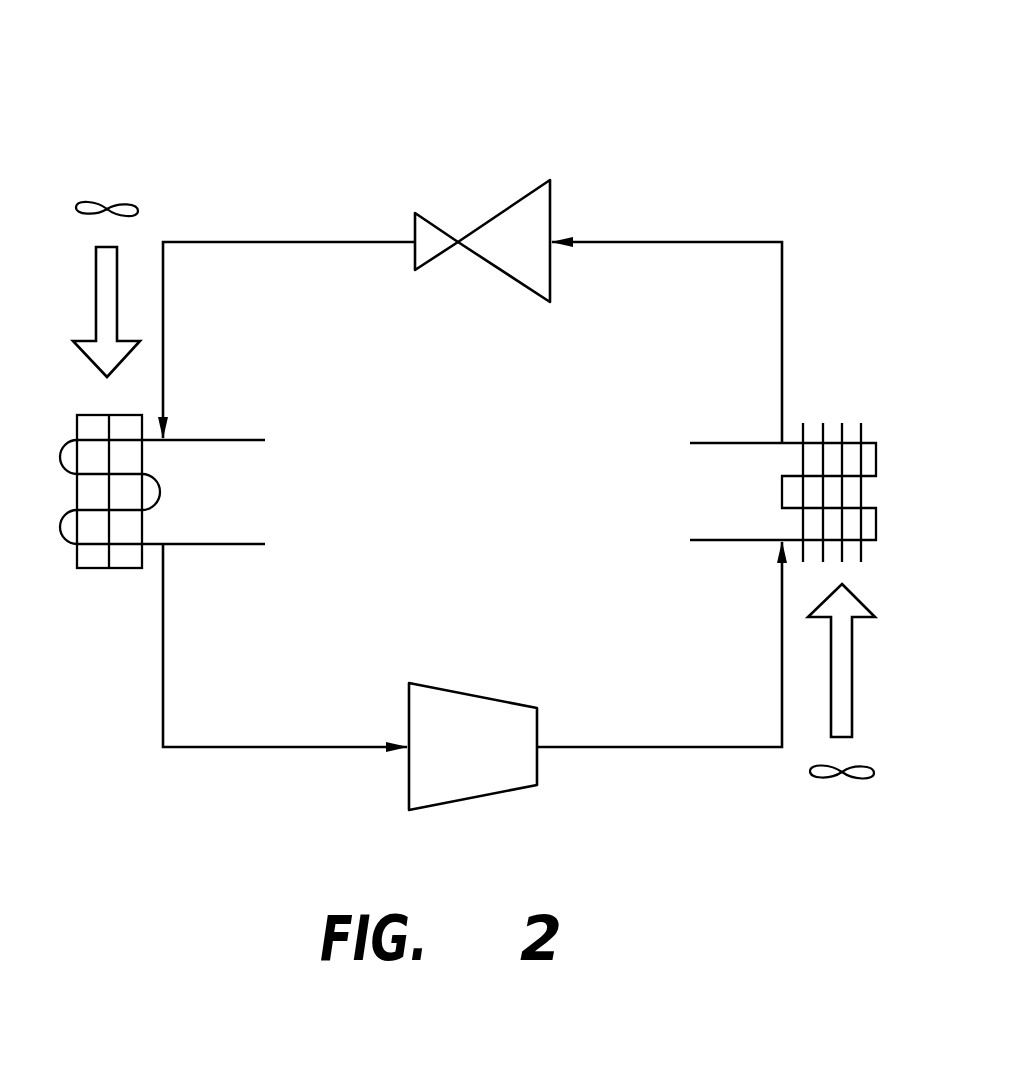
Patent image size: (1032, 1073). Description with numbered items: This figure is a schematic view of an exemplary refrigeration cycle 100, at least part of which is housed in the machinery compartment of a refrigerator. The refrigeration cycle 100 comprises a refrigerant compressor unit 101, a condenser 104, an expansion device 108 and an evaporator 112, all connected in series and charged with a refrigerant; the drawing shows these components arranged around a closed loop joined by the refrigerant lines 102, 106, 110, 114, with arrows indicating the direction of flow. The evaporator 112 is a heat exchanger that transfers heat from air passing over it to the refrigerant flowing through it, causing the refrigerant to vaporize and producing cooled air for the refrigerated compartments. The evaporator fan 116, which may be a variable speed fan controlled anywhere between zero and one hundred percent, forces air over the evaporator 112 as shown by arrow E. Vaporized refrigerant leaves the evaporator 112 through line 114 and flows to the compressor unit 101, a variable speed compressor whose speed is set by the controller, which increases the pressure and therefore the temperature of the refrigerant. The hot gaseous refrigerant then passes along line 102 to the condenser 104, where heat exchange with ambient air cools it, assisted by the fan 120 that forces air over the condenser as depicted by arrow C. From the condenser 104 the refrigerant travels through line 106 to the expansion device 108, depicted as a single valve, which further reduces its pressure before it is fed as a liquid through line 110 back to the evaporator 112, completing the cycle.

The refrigeration cycle 100 is at (262, 88).
The refrigerant compressor unit 101 is at (492, 757).
The compressor discharge line 102 is at (704, 750).
The condenser 104 is at (740, 507).
The condenser outlet line 106 is at (786, 322).
The expansion device 108 is at (540, 254).
The expansion valve outlet line 110 is at (331, 238).
The evaporator 112 is at (243, 504).
The evaporator outlet line 114 is at (160, 636).
The evaporator fan 116 is at (94, 197).
The fan 120 is at (839, 790).